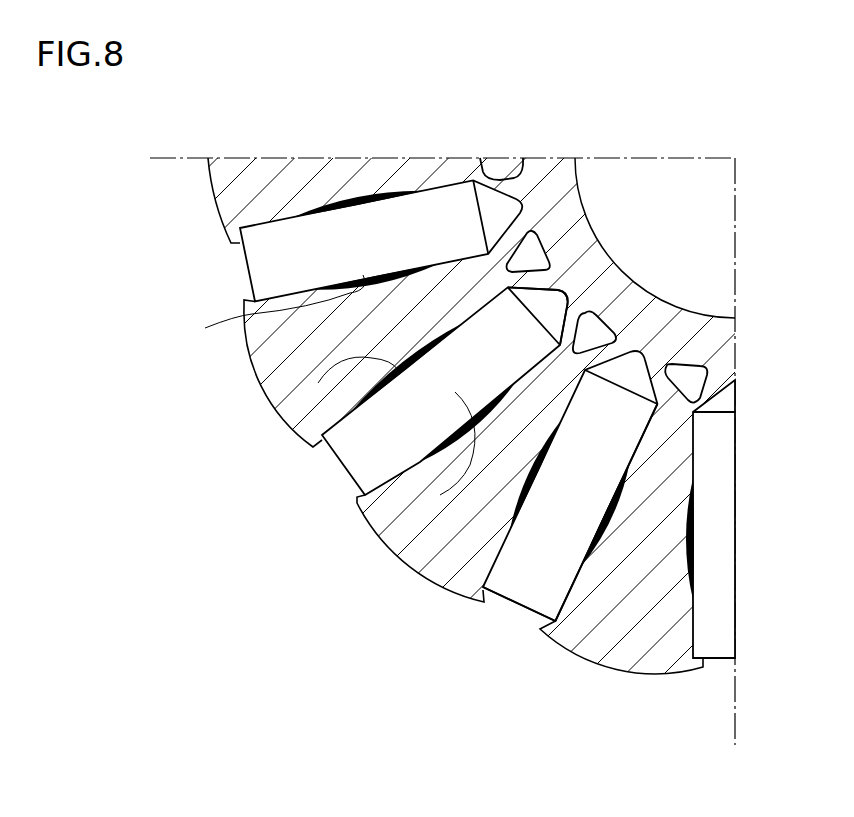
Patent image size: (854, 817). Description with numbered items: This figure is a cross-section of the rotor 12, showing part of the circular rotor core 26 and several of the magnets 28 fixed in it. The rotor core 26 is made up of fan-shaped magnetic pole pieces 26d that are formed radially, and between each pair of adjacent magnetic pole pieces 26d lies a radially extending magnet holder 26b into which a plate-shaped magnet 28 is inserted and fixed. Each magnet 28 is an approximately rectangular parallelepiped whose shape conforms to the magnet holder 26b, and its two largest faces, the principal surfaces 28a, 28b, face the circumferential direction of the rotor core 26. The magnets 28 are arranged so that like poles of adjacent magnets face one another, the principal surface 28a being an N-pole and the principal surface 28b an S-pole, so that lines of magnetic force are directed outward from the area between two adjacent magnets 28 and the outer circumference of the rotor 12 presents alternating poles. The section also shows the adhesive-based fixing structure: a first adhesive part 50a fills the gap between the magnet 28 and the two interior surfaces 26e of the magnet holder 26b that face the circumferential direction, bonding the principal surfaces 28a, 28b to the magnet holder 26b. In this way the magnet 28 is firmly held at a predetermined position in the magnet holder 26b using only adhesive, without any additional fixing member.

The rotor 12 is at (537, 796).
The rotor core 26 is at (378, 588).
The magnet holder 26b is at (512, 330).
The magnetic pole piece 26d is at (216, 211).
The interior surface of the magnet holder 26e is at (493, 298).
The magnet 28 is at (267, 263).
The principal surface 28a is at (587, 587).
The principal surface 28b is at (493, 568).
The first adhesive part 50a is at (343, 188).